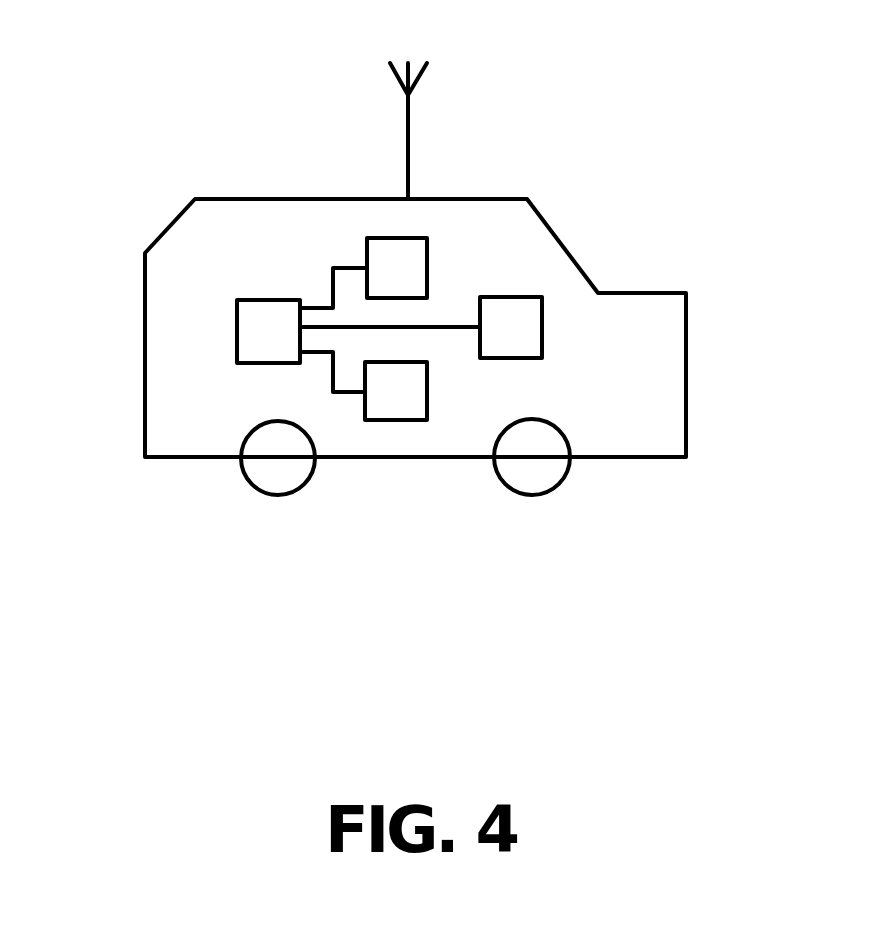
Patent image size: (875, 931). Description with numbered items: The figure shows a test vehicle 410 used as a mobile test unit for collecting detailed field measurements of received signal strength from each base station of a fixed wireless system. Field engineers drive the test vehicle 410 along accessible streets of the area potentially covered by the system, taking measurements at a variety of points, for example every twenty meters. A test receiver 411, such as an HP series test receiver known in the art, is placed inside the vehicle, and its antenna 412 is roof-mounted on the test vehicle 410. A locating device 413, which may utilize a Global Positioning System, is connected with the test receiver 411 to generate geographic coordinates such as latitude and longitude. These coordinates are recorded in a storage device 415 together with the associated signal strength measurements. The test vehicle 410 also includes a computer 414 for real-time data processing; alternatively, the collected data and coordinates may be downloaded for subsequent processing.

The test vehicle 410 is at (686, 393).
The test receiver 411 is at (375, 240).
The antenna 412 is at (410, 152).
The locating device 413 is at (393, 413).
The computer 414 is at (243, 338).
The storage device 415 is at (517, 352).